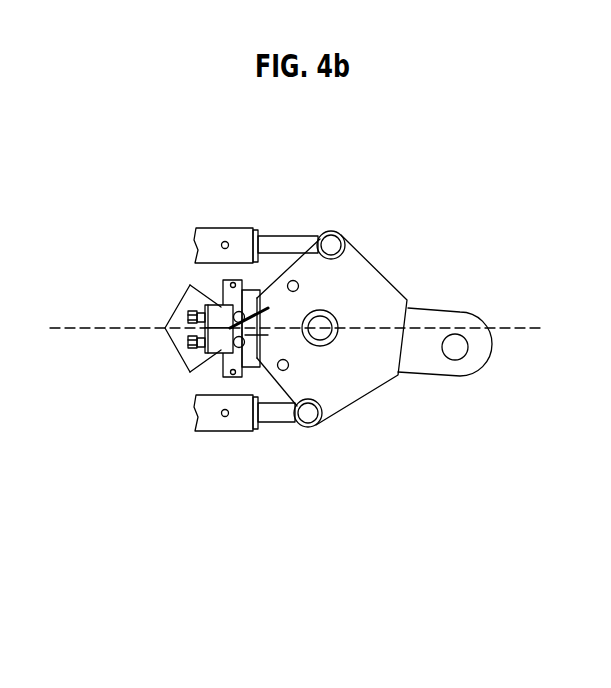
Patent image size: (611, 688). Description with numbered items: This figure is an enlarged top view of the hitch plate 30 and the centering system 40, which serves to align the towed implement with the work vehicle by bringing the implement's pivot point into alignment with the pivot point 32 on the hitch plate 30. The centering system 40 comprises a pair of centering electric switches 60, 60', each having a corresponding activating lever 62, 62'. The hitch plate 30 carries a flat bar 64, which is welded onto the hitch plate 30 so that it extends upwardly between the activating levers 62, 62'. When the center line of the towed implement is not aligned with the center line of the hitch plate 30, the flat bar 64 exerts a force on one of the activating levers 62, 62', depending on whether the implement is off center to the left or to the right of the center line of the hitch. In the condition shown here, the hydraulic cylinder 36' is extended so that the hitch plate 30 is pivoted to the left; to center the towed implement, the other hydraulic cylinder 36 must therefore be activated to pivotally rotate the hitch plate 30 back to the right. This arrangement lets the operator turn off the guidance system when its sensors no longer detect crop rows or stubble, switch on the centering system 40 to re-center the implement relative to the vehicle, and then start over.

The hitch plate 30 is at (360, 323).
The pivot point 32 is at (453, 349).
The hydraulic cylinder 36 is at (226, 456).
The hydraulic cylinder 36' is at (226, 207).
The centering system 40 is at (178, 368).
The centering electric switch 60 is at (165, 229).
The centering electric switch 60' is at (164, 430).
The activating lever 62 is at (288, 190).
The activating lever 62' is at (285, 466).
The flat bar 64 is at (258, 306).